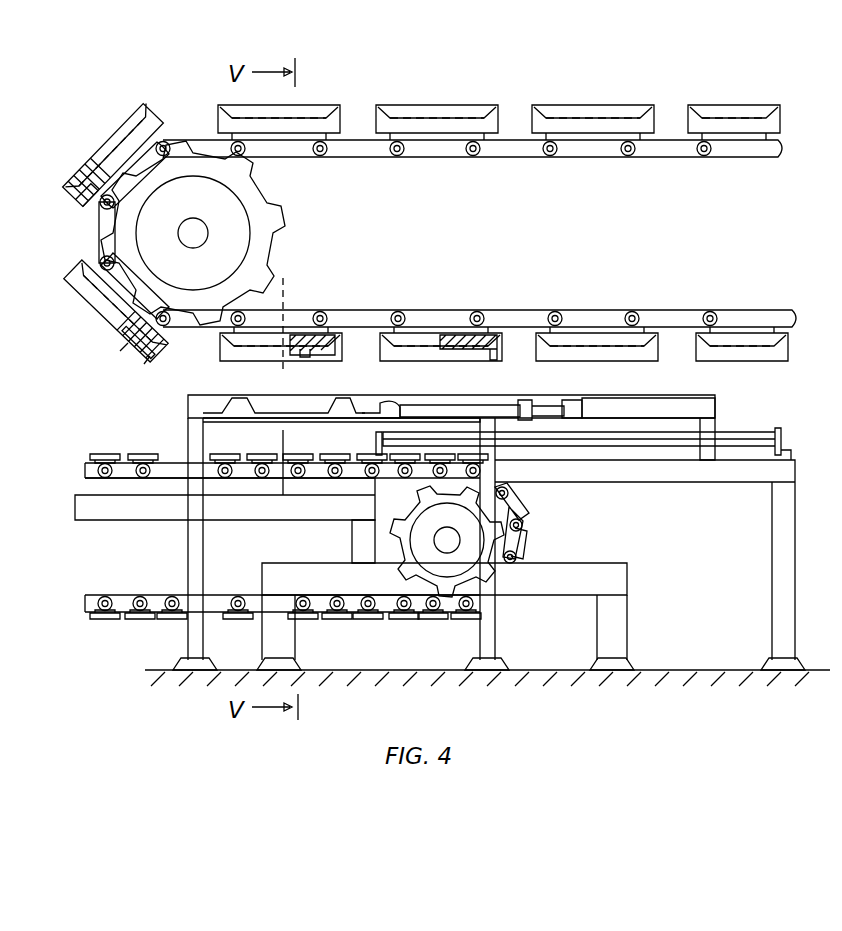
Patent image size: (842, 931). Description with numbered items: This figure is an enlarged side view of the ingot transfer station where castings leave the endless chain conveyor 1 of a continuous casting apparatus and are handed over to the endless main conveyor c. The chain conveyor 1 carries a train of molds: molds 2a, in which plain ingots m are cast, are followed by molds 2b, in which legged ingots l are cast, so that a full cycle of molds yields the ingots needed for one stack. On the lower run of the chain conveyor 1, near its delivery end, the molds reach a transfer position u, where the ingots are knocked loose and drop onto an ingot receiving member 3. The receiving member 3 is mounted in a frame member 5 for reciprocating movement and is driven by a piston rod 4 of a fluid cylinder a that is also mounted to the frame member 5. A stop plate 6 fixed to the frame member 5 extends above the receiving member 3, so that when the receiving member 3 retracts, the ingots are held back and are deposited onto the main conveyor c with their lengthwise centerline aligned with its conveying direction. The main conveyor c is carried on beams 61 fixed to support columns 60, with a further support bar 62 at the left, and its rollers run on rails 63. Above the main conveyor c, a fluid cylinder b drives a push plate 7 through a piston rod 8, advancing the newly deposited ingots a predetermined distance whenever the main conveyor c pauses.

The endless chain conveyor 1 is at (183, 92).
The plain ingot m is at (302, 106).
The mold for plain ingots 2a is at (688, 124).
The mold for legged ingots 2b is at (96, 295).
The legged ingot l is at (130, 340).
The transfer position u is at (285, 310).
The ingot receiving member 3 is at (222, 400).
The piston rod 4 is at (444, 406).
The frame member 5 is at (188, 410).
The stop plate 6 is at (370, 412).
The push plate 7 is at (378, 446).
The piston rod 8 is at (415, 440).
The fluid cylinder a is at (568, 402).
The fluid cylinder b is at (618, 432).
The endless main conveyor c is at (116, 447).
The support column 60 is at (289, 643).
The beam 61 is at (598, 574).
The support bar 62 is at (234, 508).
The rail 63 is at (300, 508).